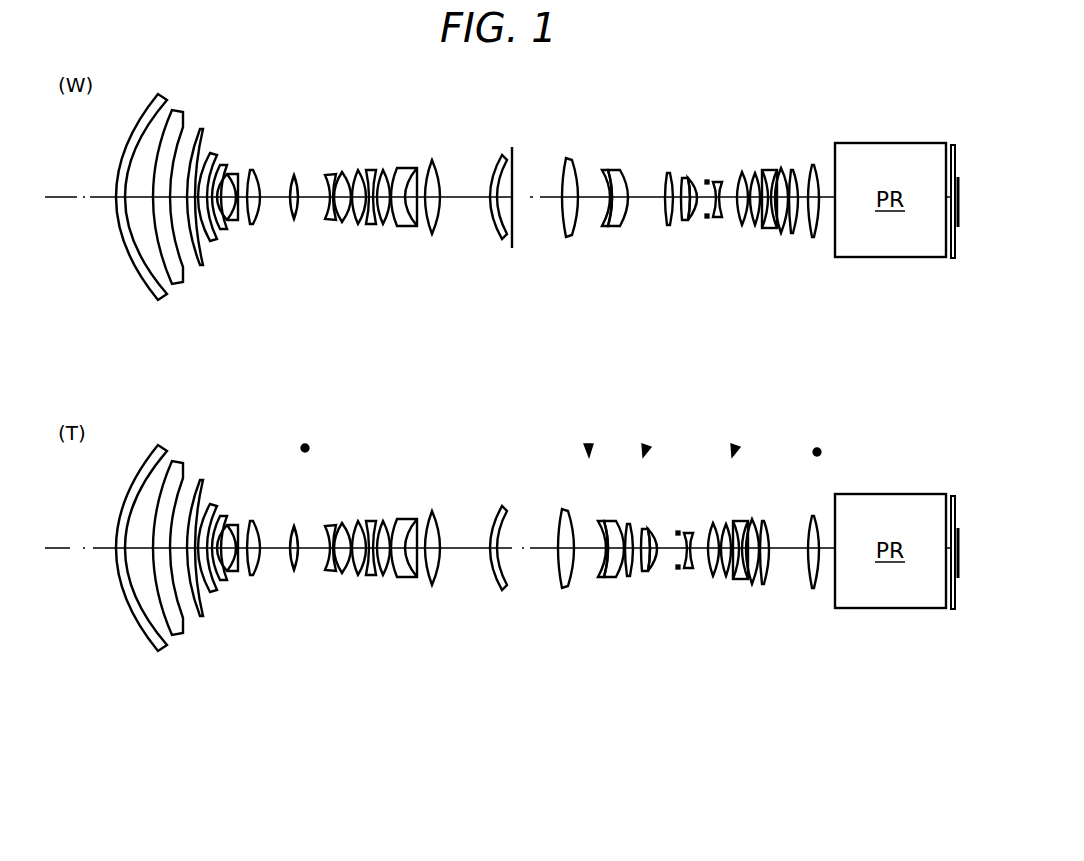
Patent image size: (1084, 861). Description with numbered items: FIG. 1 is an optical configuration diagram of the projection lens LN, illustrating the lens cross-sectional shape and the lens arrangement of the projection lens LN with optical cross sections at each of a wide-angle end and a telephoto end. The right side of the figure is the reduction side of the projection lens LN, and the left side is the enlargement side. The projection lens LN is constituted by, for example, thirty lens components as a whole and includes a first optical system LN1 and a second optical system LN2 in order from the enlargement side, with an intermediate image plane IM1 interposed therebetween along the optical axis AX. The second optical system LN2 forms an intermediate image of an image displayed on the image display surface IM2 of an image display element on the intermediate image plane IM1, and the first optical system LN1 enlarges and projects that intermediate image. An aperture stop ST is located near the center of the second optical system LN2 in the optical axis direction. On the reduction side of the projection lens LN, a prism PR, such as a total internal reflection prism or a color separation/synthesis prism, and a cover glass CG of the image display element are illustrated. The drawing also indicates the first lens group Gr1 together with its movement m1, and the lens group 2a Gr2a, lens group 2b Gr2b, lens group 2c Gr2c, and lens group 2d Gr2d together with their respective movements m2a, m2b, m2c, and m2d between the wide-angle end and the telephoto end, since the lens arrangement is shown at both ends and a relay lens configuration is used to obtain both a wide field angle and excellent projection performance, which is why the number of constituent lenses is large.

The optical axis AX is at (68, 189).
The intermediate image plane IM1 is at (513, 141).
The aperture stop ST is at (709, 173).
The prism PR is at (890, 375).
The cover glass CG is at (950, 260).
The image display surface IM2 is at (958, 228).
The first lens group Gr1 is at (103, 300).
The lens group 2a Gr2a is at (589, 446).
The lens group 2b Gr2b is at (645, 447).
The lens group 2c Gr2c is at (734, 447).
The lens group 2d Gr2d is at (817, 450).
The movement of first lens group m1 is at (308, 465).
The movement of lens group 2a m2a is at (582, 465).
The movement of lens group 2b m2b is at (655, 465).
The movement of lens group 2c m2c is at (738, 465).
The movement of lens group 2d m2d is at (817, 467).
The first optical system LN1 is at (508, 658).
The second optical system LN2 is at (684, 608).
The projection lens LN is at (465, 603).